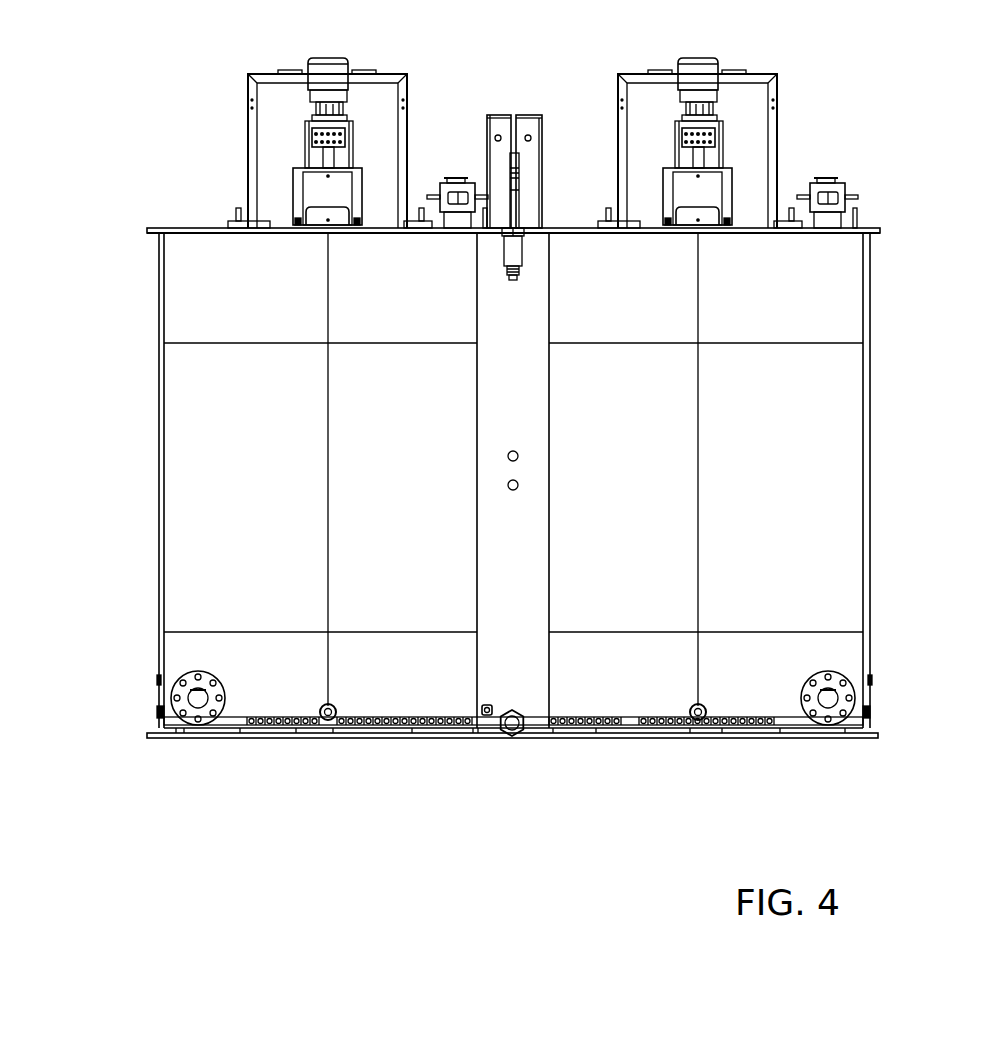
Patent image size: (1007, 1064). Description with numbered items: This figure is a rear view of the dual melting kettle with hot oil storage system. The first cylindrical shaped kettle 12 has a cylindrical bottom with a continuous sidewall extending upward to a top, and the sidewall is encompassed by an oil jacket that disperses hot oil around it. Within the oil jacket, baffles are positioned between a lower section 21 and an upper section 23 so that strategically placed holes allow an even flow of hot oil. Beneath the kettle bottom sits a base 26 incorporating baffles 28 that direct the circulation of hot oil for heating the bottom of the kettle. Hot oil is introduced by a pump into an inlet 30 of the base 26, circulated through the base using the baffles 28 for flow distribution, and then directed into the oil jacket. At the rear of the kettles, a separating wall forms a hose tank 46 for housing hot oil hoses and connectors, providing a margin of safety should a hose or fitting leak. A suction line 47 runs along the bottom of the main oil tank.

The first cylindrical shaped kettle 12 is at (147, 472).
The lower section 21 is at (162, 630).
The upper section 23 is at (213, 344).
The base 26 is at (172, 735).
The baffles 28 is at (283, 725).
The inlet 30 is at (333, 727).
The hose tank 46 is at (530, 265).
The suction line 47 is at (520, 733).